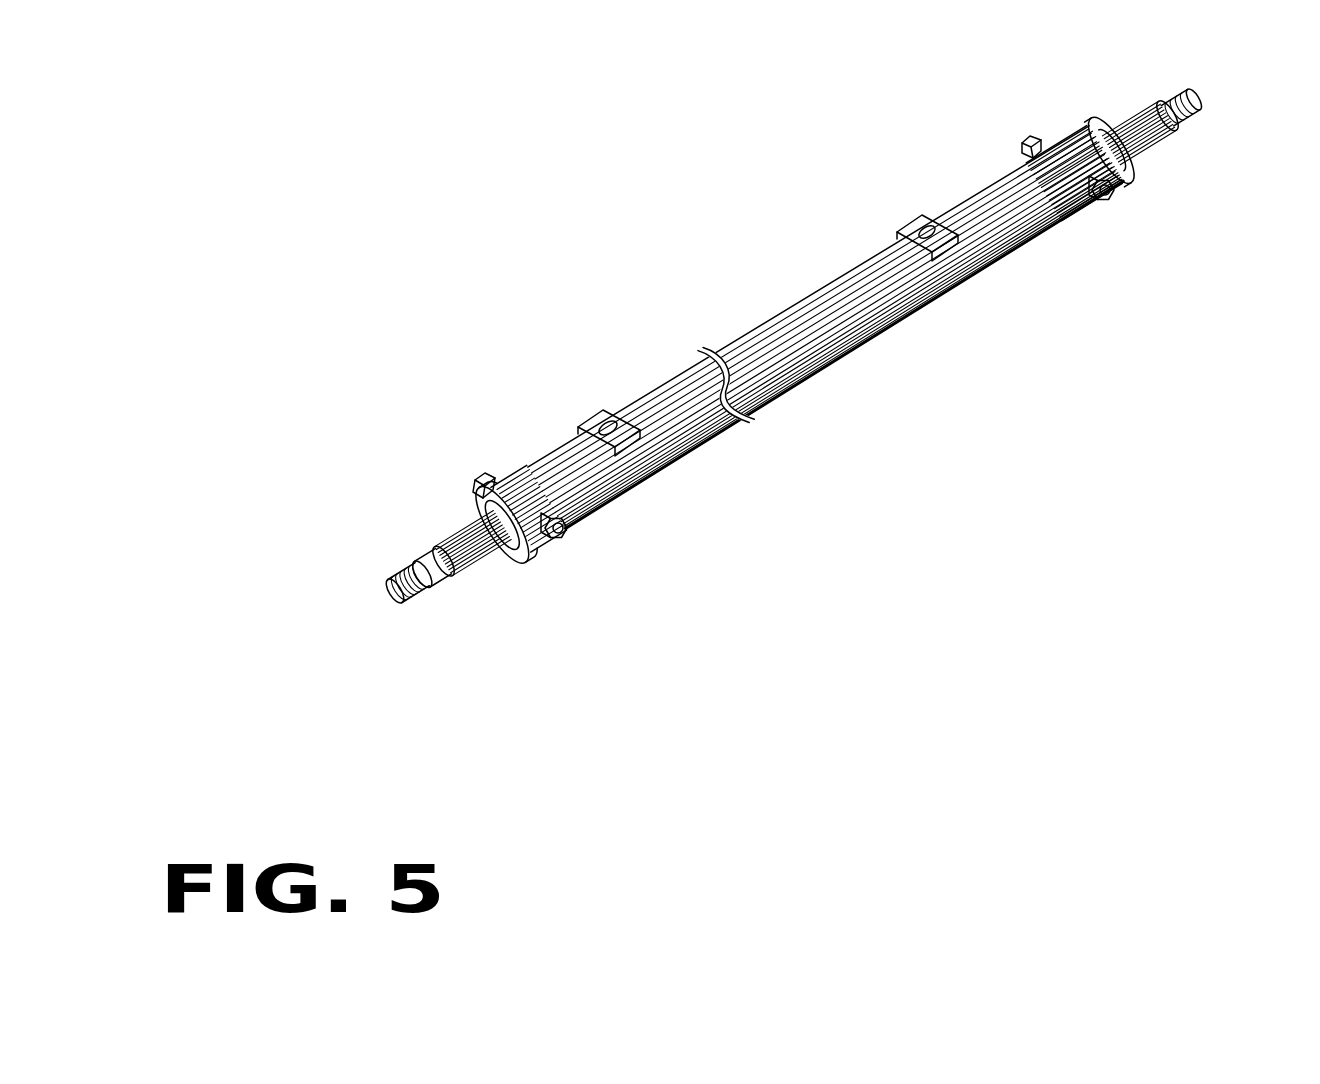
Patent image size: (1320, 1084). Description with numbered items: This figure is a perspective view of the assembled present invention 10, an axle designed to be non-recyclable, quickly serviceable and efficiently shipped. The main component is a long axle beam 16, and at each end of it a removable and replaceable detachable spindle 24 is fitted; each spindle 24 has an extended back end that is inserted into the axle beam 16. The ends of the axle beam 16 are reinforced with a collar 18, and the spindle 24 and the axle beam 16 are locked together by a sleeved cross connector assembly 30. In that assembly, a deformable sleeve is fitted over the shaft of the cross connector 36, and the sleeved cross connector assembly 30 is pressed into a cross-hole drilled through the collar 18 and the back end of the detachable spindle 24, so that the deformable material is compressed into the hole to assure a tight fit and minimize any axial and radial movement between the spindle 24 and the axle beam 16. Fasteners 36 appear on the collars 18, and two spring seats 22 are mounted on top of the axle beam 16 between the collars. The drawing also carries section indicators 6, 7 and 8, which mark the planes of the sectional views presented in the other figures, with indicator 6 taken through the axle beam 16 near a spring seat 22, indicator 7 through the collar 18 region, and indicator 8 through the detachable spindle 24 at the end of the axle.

The present invention 10 is at (1017, 498).
The axle beam 16 is at (852, 348).
The collar 18 is at (543, 543).
The spring seats 22 is at (593, 418).
The detachable spindle 24 is at (432, 578).
The sleeved cross connector assembly 30 is at (567, 540).
The fasteners 36 is at (472, 487).
The section line 6- 6 is at (287, 375).
The section line 7- 7 is at (525, 743).
The section line 8- 8 is at (445, 697).